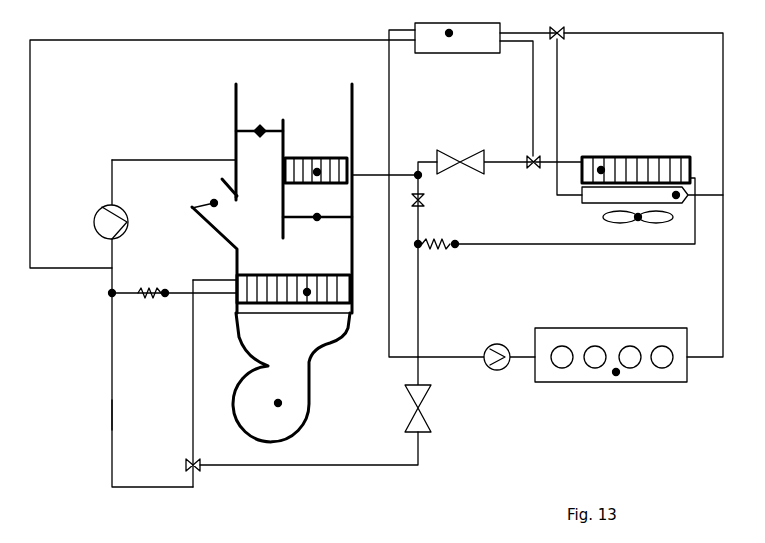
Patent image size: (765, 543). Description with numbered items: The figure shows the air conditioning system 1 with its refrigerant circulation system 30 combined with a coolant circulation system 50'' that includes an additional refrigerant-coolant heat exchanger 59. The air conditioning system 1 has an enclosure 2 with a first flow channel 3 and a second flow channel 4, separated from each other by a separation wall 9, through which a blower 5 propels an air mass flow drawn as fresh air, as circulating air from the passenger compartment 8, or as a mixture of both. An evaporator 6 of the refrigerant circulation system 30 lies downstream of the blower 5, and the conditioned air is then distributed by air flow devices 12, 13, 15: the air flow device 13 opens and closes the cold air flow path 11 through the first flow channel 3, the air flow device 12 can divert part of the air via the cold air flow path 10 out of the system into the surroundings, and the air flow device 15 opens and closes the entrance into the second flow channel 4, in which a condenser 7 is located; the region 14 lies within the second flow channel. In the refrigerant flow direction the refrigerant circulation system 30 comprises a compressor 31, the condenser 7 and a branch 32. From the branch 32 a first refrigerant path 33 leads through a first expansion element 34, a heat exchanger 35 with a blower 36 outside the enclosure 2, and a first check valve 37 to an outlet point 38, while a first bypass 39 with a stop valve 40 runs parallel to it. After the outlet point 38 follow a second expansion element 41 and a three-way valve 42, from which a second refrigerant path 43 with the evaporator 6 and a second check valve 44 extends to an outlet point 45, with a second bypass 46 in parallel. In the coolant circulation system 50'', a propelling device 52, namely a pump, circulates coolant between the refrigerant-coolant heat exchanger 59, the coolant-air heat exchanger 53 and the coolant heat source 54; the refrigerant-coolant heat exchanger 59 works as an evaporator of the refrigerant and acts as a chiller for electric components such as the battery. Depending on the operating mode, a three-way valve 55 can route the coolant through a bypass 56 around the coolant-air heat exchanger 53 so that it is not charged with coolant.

The air conditioning system 1 is at (662, 114).
The enclosure 2 is at (236, 100).
The first flow channel 3 is at (232, 153).
The second flow channel 4 is at (356, 122).
The blower 5 is at (278, 403).
The evaporator 6 is at (307, 292).
The condenser 7 is at (317, 172).
The passenger compartment 8 is at (299, 98).
The separation wall 9 is at (283, 227).
The cold air flow path 10 is at (213, 189).
The cold air flow path 11 is at (268, 193).
The air flow device 12 is at (214, 203).
The air flow device 13 is at (236, 128).
The air duct 14 is at (327, 140).
The air flow device 15 is at (318, 220).
The refrigerant circulation system 30 is at (428, 460).
The compressor 31 is at (125, 235).
The branch 32 is at (389, 170).
The first refrigerant path 33 is at (417, 171).
The first expansion element 34 is at (460, 160).
The heat exchanger 35 is at (601, 167).
The blower 36 is at (638, 219).
The first check valve 37 is at (457, 249).
The outlet point 38 is at (420, 249).
The first bypass 39 is at (430, 240).
The stop valve 40 is at (426, 202).
The second expansion element 41 is at (30, 155).
The three-way valve 42 is at (190, 461).
The second refrigerant path 43 is at (193, 407).
The second check valve 44 is at (163, 298).
The outlet point 45 is at (112, 293).
The second bypass 46 is at (112, 412).
The coolant circulation system 50'' is at (468, 326).
The propelling device 52 is at (499, 364).
The coolant-air heat exchanger 53 is at (677, 198).
The coolant heat source 54 is at (617, 375).
The three-way valve 55 is at (563, 38).
The bypass 56 is at (640, 34).
The refrigerant-coolant heat exchanger 59 is at (449, 36).